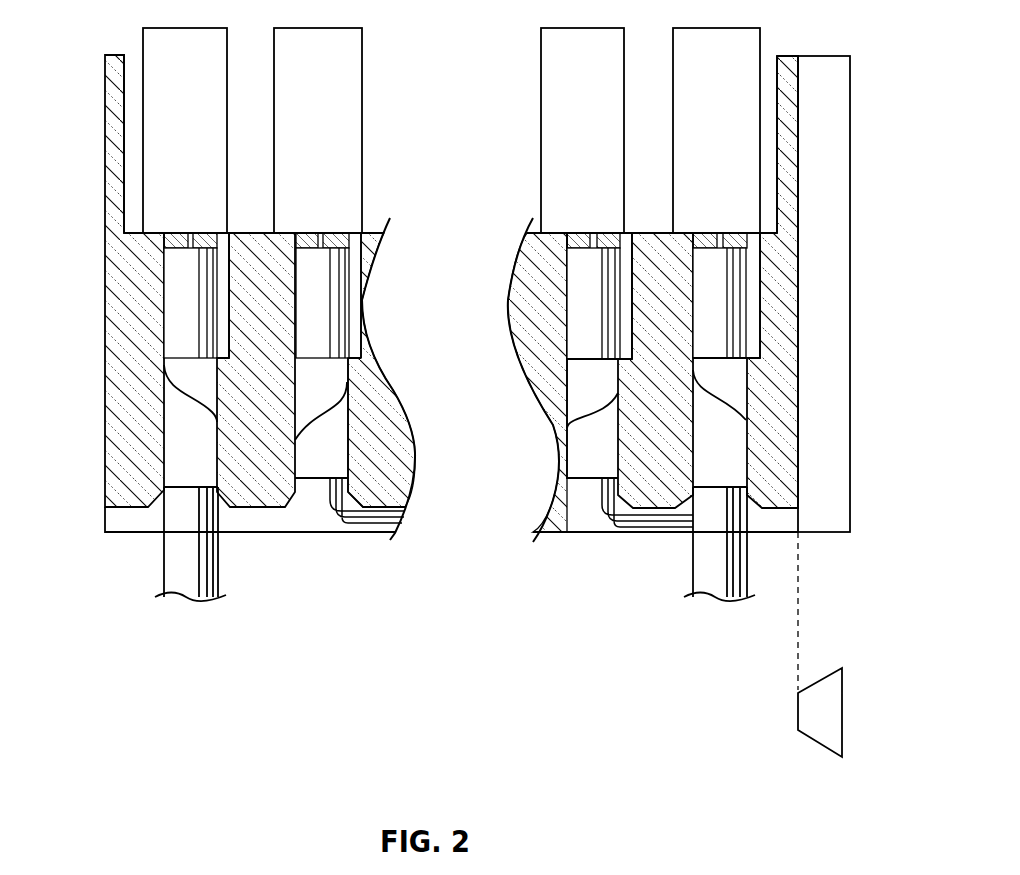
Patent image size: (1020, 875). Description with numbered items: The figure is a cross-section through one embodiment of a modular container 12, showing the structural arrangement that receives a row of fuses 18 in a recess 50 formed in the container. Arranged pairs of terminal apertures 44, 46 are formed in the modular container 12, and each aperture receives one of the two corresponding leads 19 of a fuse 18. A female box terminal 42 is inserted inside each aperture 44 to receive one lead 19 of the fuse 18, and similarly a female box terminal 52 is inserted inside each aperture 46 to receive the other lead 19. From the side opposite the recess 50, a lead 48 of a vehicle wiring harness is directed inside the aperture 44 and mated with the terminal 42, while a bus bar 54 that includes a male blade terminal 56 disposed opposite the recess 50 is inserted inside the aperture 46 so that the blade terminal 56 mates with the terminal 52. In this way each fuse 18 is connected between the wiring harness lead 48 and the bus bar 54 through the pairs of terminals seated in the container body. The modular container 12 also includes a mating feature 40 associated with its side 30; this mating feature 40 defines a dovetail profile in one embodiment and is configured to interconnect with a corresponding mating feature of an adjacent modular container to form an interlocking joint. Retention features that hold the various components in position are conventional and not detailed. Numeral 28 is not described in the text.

The modular container 12 is at (105, 377).
The fuse 18 is at (187, 28).
The lead 19 is at (188, 232).
The side wall 28 is at (105, 280).
The side 30 is at (798, 447).
The mating feature 40 is at (850, 332).
The female box terminal 42 is at (180, 273).
The terminal aperture 44 is at (228, 242).
The terminal aperture 46 is at (355, 252).
The lead 48 is at (164, 580).
The recess 50 is at (768, 62).
The female box terminal 52 is at (322, 302).
The bus bar 54 is at (375, 533).
The male blade terminal 56 is at (333, 532).